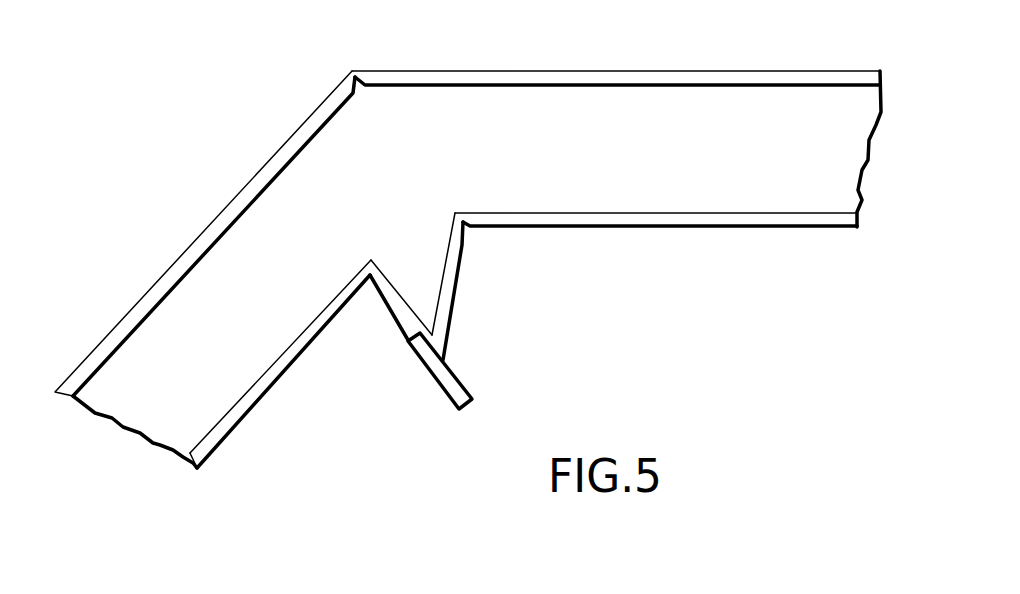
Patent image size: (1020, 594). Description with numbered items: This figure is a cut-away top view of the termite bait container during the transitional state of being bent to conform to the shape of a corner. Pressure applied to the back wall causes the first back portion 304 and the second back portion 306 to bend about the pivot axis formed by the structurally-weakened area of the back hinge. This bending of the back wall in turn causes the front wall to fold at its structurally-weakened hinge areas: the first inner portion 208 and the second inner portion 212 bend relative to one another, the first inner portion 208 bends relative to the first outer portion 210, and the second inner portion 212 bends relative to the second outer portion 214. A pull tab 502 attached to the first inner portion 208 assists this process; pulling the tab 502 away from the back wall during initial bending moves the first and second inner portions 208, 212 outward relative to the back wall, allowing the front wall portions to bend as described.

The second back portion 306 is at (676, 70).
The second outer portion 214 is at (692, 220).
The first back portion 304 is at (230, 202).
The first outer portion 210 is at (253, 395).
The first inner portion 208 is at (395, 297).
The second inner portion 212 is at (452, 297).
The pull tab 502 is at (445, 388).